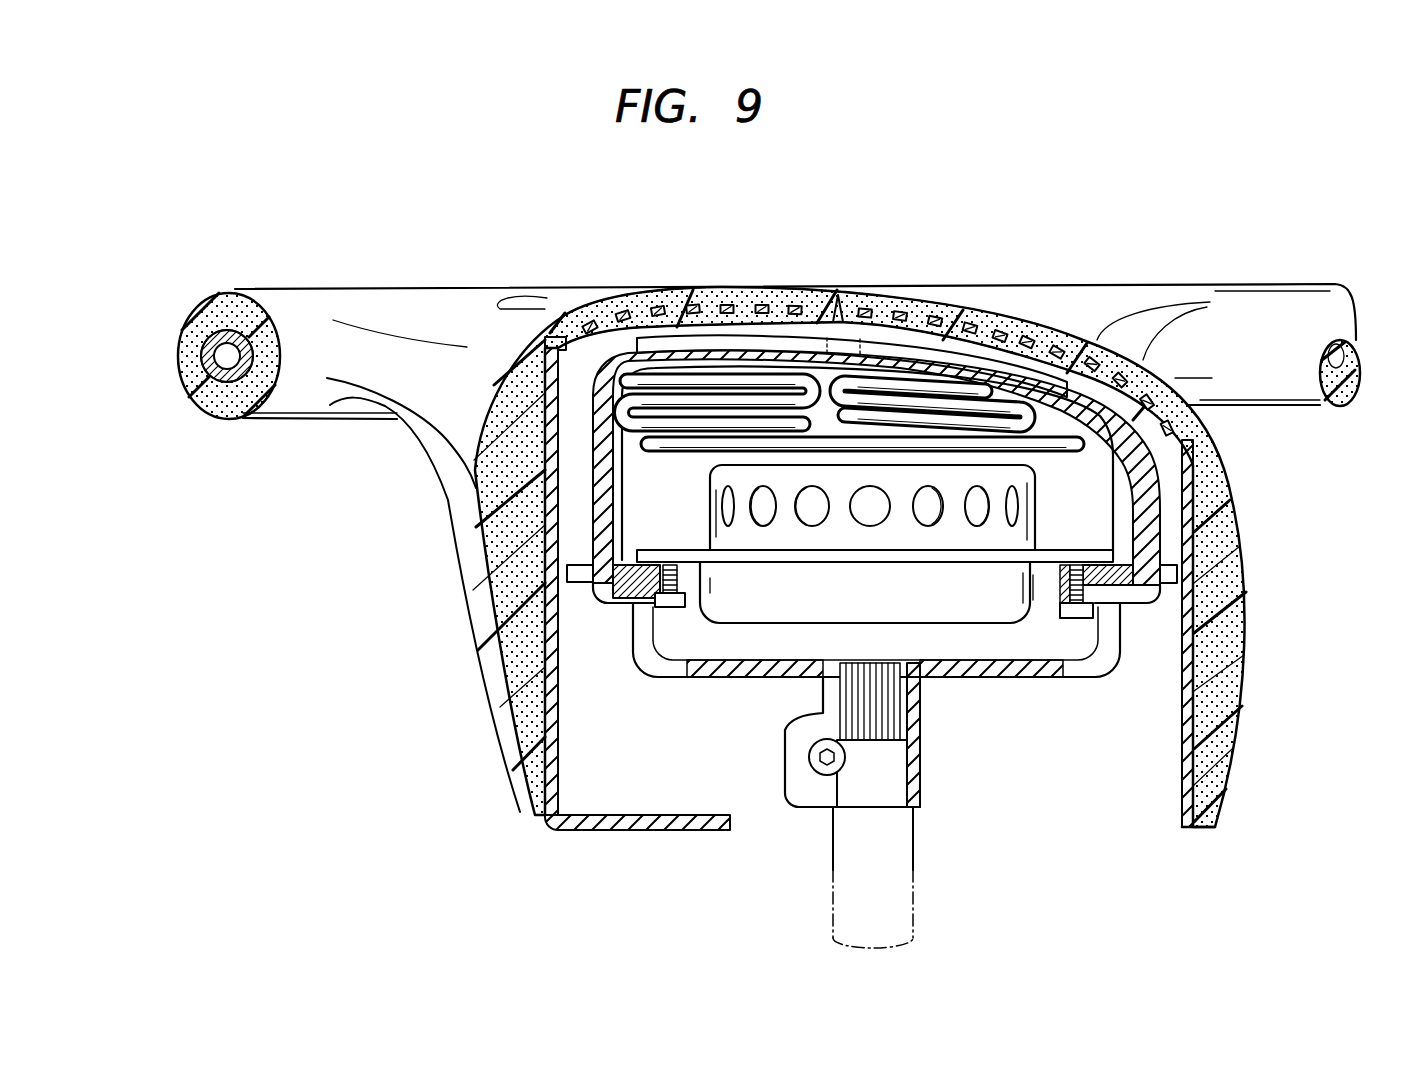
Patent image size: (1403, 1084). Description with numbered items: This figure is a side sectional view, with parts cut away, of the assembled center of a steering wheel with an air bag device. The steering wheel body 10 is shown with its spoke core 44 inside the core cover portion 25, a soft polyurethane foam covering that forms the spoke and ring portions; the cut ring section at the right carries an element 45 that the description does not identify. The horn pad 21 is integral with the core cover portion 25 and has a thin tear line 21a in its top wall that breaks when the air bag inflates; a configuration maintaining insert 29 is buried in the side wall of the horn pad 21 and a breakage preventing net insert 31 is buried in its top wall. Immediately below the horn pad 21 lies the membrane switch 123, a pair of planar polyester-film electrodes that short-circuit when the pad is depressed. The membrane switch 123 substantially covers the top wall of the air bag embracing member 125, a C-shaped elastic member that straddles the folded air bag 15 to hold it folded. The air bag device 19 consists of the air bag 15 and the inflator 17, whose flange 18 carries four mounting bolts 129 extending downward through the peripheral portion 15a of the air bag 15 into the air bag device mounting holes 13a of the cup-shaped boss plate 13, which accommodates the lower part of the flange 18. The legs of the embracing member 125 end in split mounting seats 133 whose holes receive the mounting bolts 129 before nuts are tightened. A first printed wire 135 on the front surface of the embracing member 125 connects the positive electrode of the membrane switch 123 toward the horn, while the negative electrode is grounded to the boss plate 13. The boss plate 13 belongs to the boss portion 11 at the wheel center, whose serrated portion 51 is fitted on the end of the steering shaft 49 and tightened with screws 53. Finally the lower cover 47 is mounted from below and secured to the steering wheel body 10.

The steering wheel body 10 is at (397, 290).
The spoke core 44 is at (228, 348).
The core cover portion 25 is at (228, 420).
The tube end 45 is at (1341, 402).
The configuration maintaining insert 29 is at (547, 520).
The lower cover 47 is at (627, 833).
The horn pad 21 is at (810, 297).
The tear line 21a is at (846, 300).
The breakage preventing net insert 31 is at (620, 303).
The membrane switch 123 is at (707, 337).
The air bag embracing member 125 is at (1097, 410).
The air bag 15 is at (930, 385).
The peripheral portion of the air bag 15a is at (617, 608).
The inflator 17 is at (977, 615).
The flange 18 is at (657, 550).
The air bag device 19 is at (950, 735).
The boss plate 13 is at (722, 670).
The air bag device mounting holes 13a is at (1090, 600).
The mounting seats 133 is at (1145, 597).
The mounting bolts 129 is at (668, 615).
The first printed wire 135 is at (655, 608).
The serrated portion 51 is at (853, 702).
The screws 53 is at (820, 775).
The boss portion 11 is at (917, 780).
The steering shaft 49 is at (913, 913).